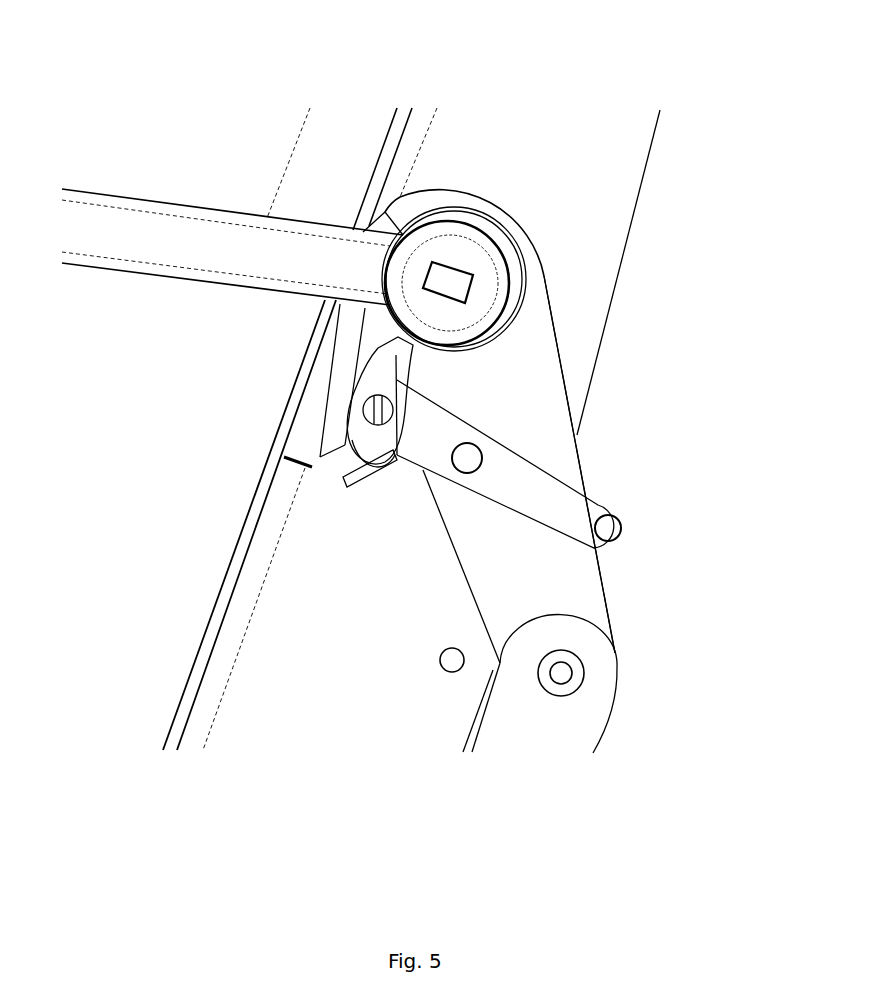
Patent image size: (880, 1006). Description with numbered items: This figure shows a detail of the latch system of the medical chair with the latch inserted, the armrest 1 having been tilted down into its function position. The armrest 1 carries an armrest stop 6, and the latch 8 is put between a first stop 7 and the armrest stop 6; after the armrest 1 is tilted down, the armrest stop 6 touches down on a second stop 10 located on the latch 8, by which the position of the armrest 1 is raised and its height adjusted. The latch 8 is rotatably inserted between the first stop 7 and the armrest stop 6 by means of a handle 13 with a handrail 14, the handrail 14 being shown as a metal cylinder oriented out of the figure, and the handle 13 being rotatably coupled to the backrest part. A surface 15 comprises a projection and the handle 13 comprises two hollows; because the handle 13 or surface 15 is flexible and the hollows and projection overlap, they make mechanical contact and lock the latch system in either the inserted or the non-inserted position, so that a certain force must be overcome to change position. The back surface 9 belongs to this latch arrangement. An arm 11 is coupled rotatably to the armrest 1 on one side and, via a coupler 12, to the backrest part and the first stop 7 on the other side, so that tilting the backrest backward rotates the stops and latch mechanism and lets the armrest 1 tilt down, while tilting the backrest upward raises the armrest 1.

The armrest 1 is at (122, 235).
The armrest stop 6 is at (382, 330).
The first stop 7 is at (513, 335).
The latch 8 is at (363, 475).
The back surface 9 is at (398, 356).
The second stop 10 is at (393, 352).
The arm 11 is at (553, 567).
The coupler 12 is at (562, 722).
The handle 13 is at (542, 498).
The handrail 14 is at (612, 530).
The surface 15 is at (347, 457).